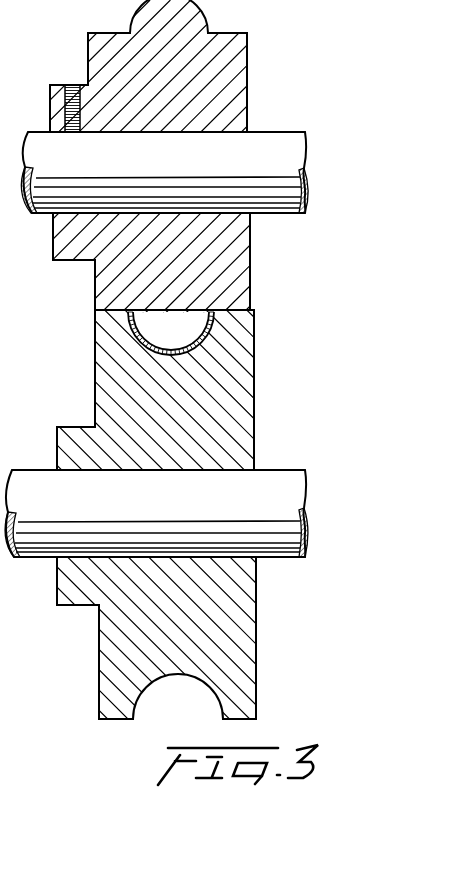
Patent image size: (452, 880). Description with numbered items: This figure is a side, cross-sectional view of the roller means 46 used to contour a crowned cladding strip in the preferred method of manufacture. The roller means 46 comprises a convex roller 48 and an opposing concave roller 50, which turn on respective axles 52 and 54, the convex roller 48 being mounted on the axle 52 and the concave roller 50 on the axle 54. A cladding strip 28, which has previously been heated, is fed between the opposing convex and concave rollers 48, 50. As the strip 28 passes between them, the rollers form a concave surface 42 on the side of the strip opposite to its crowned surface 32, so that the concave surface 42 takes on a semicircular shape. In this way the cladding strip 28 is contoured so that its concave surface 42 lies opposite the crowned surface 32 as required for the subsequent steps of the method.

The cladding strip 28 is at (224, 325).
The crowned surface 32 is at (150, 352).
The concave surface 42 is at (173, 345).
The roller means 46 is at (264, 409).
The convex roller 48 is at (246, 53).
The concave roller 50 is at (250, 450).
The axle 52 is at (277, 138).
The axle 54 is at (268, 538).